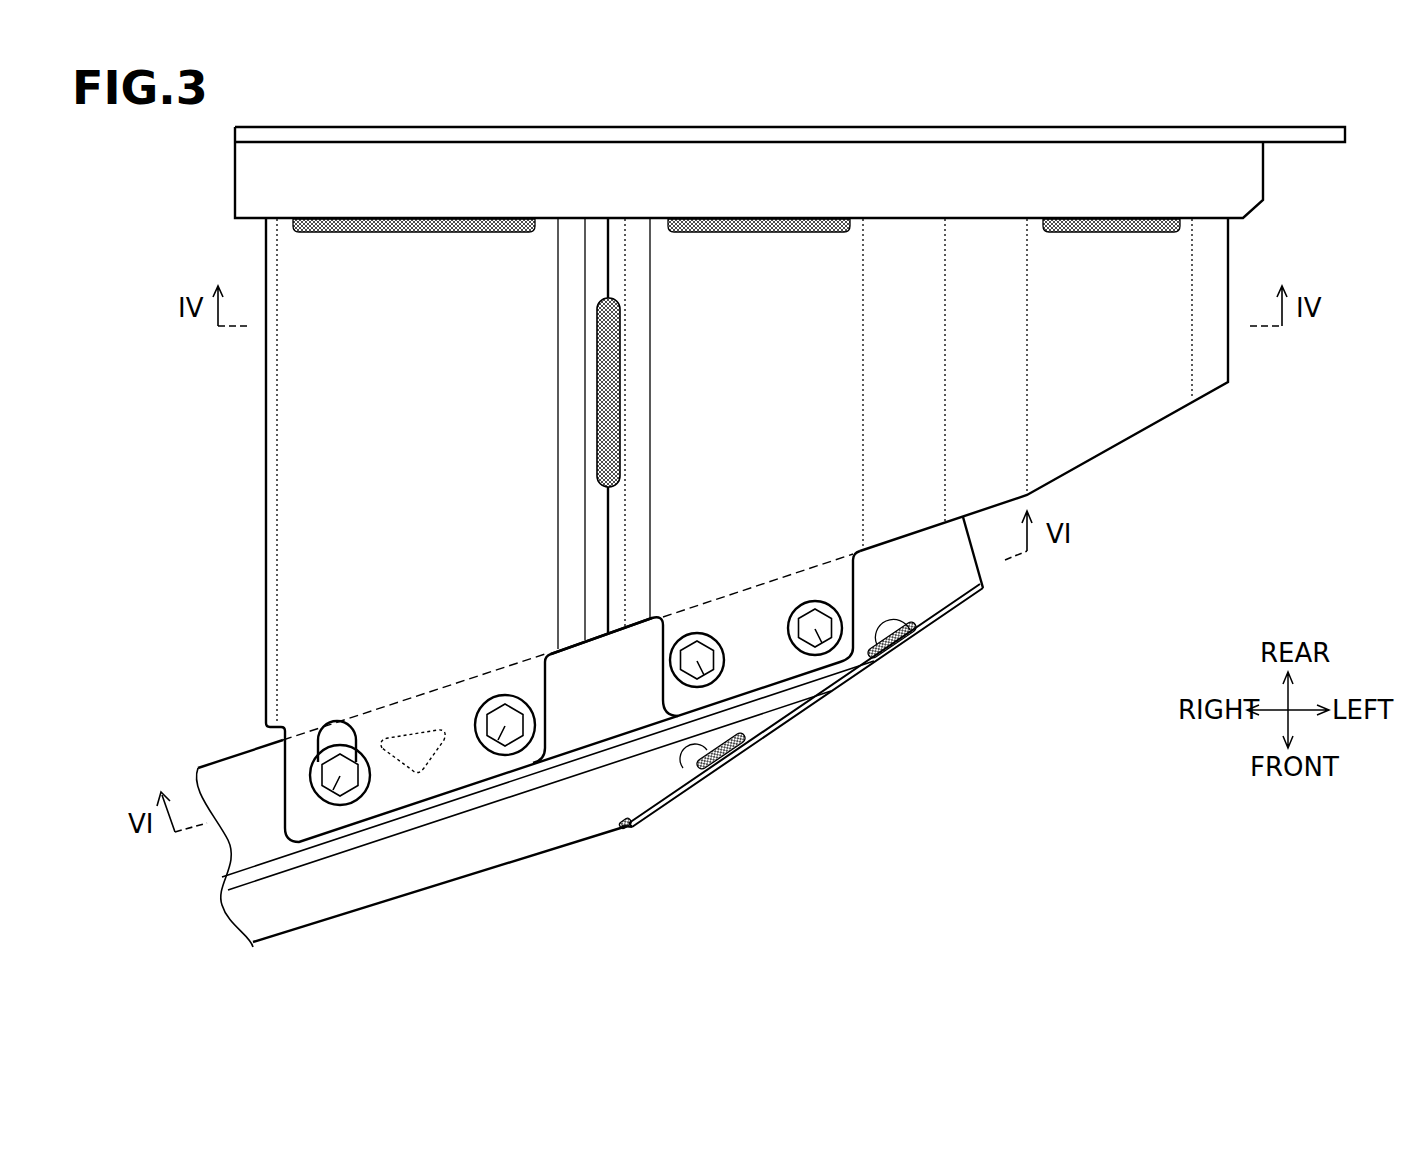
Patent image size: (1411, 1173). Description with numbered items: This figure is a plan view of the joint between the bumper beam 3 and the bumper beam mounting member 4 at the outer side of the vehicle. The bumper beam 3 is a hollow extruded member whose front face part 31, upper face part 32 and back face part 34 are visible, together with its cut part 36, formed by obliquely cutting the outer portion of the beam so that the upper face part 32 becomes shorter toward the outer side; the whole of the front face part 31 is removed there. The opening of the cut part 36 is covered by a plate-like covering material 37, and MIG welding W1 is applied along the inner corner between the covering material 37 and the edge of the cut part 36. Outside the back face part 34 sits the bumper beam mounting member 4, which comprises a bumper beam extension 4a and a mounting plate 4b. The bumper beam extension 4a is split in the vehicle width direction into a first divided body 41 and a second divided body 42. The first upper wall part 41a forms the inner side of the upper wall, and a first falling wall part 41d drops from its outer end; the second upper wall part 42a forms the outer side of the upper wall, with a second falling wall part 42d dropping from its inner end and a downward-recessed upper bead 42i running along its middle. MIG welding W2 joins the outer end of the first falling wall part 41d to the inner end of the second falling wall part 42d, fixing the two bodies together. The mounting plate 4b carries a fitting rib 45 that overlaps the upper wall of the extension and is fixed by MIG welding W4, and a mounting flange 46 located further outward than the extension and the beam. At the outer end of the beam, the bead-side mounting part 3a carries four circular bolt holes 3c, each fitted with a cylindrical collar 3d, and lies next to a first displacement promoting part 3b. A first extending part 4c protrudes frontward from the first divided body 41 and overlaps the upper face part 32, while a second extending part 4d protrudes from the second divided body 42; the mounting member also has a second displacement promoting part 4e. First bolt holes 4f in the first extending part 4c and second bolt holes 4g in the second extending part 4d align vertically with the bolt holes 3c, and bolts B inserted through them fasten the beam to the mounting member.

The bumper beam 3 is at (533, 773).
The bead-side mounting part 3a is at (587, 723).
The first displacement promoting part 3b is at (414, 712).
The bolt hole 3c is at (651, 788).
The collar 3d is at (651, 788).
The front face part 31 is at (295, 933).
The upper face part 32 is at (328, 888).
The back face part 34 is at (232, 755).
The cut part 36 is at (968, 600).
The covering material 37 is at (850, 695).
The bumper beam mounting member 4 is at (799, 525).
The bumper beam extension 4a is at (1254, 373).
The mounting plate 4b is at (819, 399).
The first extending part 4c is at (287, 780).
The second extending part 4d is at (826, 709).
The second displacement promoting part 4e is at (343, 727).
The first bolt hole 4f is at (499, 811).
The second bolt hole 4g is at (704, 670).
The first divided body 41 is at (590, 199).
The first upper wall part 41a is at (357, 265).
The first falling wall part 41d is at (557, 270).
The second divided body 42 is at (637, 199).
The second upper wall part 42a is at (795, 263).
The second falling wall part 42d is at (680, 255).
The upper bead 42i is at (980, 262).
The fitting rib 45 is at (1098, 178).
The mounting flange 46 is at (1308, 128).
The bolt B is at (651, 788).
The MIG welding W1 is at (910, 658).
The MIG welding W2 is at (608, 386).
The MIG welding W4 is at (425, 233).